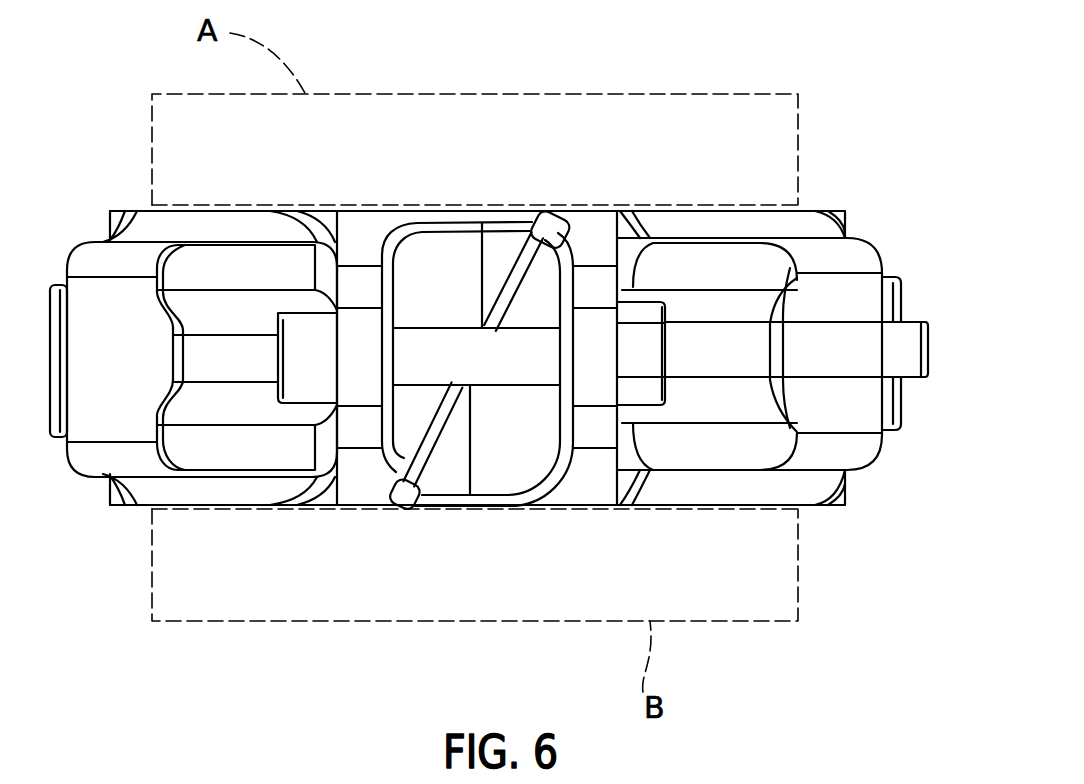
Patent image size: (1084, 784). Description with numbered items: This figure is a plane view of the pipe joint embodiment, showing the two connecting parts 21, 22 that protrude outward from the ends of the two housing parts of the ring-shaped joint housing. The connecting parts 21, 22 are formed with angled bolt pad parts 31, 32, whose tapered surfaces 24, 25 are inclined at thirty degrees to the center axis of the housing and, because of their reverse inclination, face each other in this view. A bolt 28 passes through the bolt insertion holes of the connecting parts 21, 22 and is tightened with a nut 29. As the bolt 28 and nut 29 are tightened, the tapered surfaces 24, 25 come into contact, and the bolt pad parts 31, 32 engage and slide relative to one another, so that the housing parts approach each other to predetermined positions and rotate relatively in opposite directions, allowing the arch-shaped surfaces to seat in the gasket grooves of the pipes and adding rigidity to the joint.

The connecting part 21 is at (362, 290).
The connecting part 22 is at (590, 297).
The tapered surface 24 is at (517, 287).
The tapered surface 25 is at (413, 450).
The bolt 28 is at (303, 383).
The nut 29 is at (640, 343).
The angled bolt pad part 31 is at (445, 290).
The angled bolt pad part 32 is at (503, 450).